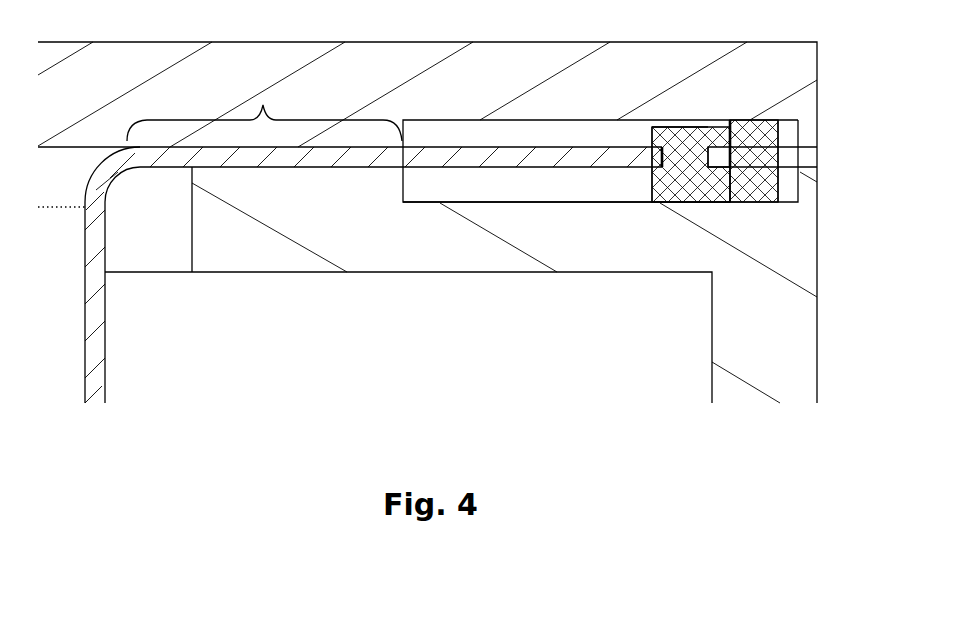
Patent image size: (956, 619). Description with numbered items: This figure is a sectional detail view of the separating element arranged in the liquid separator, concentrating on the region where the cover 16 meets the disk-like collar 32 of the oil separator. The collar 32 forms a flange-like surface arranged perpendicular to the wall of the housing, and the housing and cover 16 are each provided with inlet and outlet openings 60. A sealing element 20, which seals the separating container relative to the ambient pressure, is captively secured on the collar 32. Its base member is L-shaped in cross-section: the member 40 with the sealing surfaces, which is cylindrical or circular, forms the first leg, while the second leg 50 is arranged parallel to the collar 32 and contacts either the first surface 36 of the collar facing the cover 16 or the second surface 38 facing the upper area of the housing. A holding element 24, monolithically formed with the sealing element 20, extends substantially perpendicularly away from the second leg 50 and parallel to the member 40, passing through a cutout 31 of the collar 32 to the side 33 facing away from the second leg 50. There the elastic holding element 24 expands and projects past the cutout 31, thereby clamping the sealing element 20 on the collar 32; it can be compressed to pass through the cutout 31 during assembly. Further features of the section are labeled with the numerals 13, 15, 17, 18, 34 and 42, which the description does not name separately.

The recess / notch 13 is at (712, 186).
The lower layer 15 is at (504, 195).
The cover 16 is at (504, 87).
The upper layer 17 is at (504, 144).
The end portion 18 is at (768, 120).
The sealing element 20 is at (798, 158).
The holding element 24 is at (696, 151).
The cutout 31 is at (665, 160).
The collar 32 is at (283, 158).
The side of the collar 33 is at (660, 146).
The wall 34 is at (731, 168).
The first surface 36 is at (676, 96).
The second surface 38 is at (565, 203).
The member with sealing surfaces 40 is at (773, 161).
The stop wall 42 is at (733, 120).
The second leg 50 is at (731, 191).
The outlet openings 60 is at (264, 107).